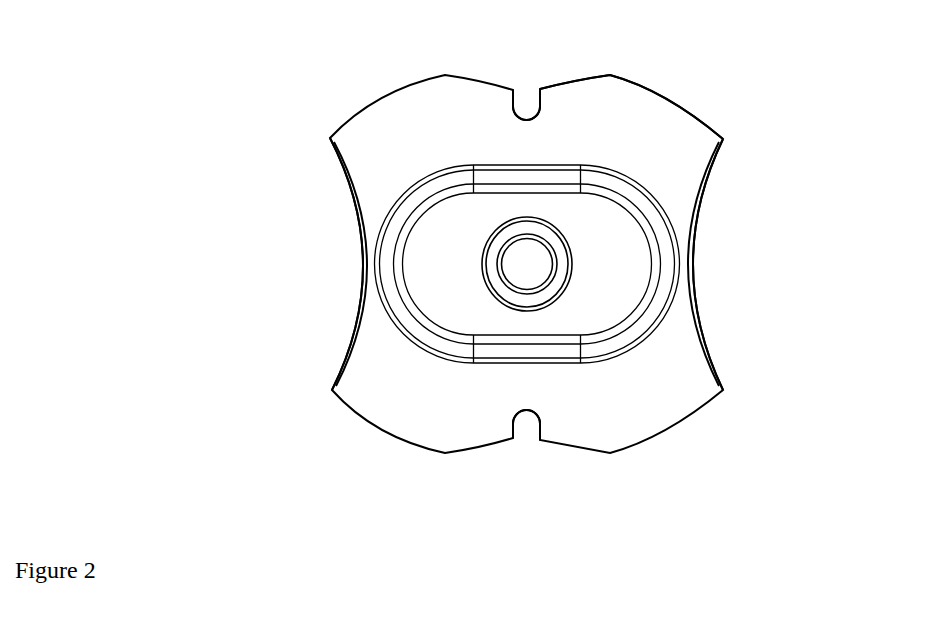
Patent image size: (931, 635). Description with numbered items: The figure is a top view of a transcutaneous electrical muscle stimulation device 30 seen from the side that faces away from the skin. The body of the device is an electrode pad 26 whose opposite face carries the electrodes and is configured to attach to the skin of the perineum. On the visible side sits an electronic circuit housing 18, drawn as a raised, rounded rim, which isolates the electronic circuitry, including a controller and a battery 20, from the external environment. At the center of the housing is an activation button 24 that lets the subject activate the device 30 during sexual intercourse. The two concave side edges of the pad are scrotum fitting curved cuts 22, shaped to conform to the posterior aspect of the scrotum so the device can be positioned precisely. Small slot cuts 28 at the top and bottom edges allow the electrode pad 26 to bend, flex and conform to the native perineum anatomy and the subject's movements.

The electronic circuit housing 18 is at (638, 255).
The battery 20 is at (515, 302).
The scrotum fitting curved cuts 22 is at (355, 200).
The activation button 24 is at (523, 262).
The electrode pad 26 is at (660, 122).
The slot cuts 28 is at (527, 115).
The transcutaneous electrical muscle stimulation device 30 is at (315, 115).